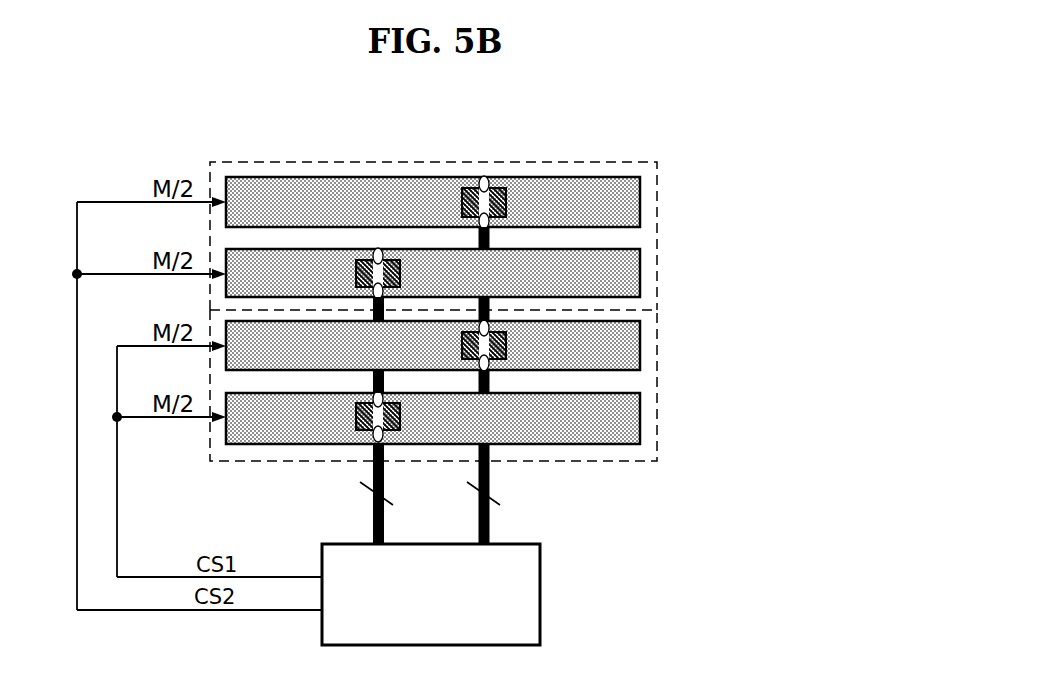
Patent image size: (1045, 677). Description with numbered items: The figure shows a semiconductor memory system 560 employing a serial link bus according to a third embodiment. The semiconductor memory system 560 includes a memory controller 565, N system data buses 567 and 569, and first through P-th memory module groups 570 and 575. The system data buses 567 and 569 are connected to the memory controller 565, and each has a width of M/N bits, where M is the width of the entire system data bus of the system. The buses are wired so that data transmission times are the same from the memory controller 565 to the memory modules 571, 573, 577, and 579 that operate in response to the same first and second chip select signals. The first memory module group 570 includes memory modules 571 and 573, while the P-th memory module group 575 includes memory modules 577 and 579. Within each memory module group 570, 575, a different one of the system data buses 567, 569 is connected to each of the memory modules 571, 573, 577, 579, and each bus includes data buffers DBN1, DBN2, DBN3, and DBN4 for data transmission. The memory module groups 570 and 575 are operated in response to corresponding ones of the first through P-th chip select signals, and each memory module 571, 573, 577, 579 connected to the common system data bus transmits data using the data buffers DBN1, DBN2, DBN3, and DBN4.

The semiconductor memory system 560 is at (660, 132).
The P-th memory module group 575 is at (436, 163).
The first memory module group 570 is at (610, 462).
The memory module 577 is at (640, 202).
The memory module 579 is at (640, 275).
The memory module 573 is at (640, 348).
The memory module 571 is at (640, 418).
The system data bus 567 is at (373, 522).
The system data bus 569 is at (490, 522).
The memory controller 565 is at (540, 596).
The data buffer DBN1 is at (357, 420).
The data buffer DBN2 is at (506, 348).
The data buffer DBN3 is at (368, 254).
The data buffer DBN4 is at (502, 184).